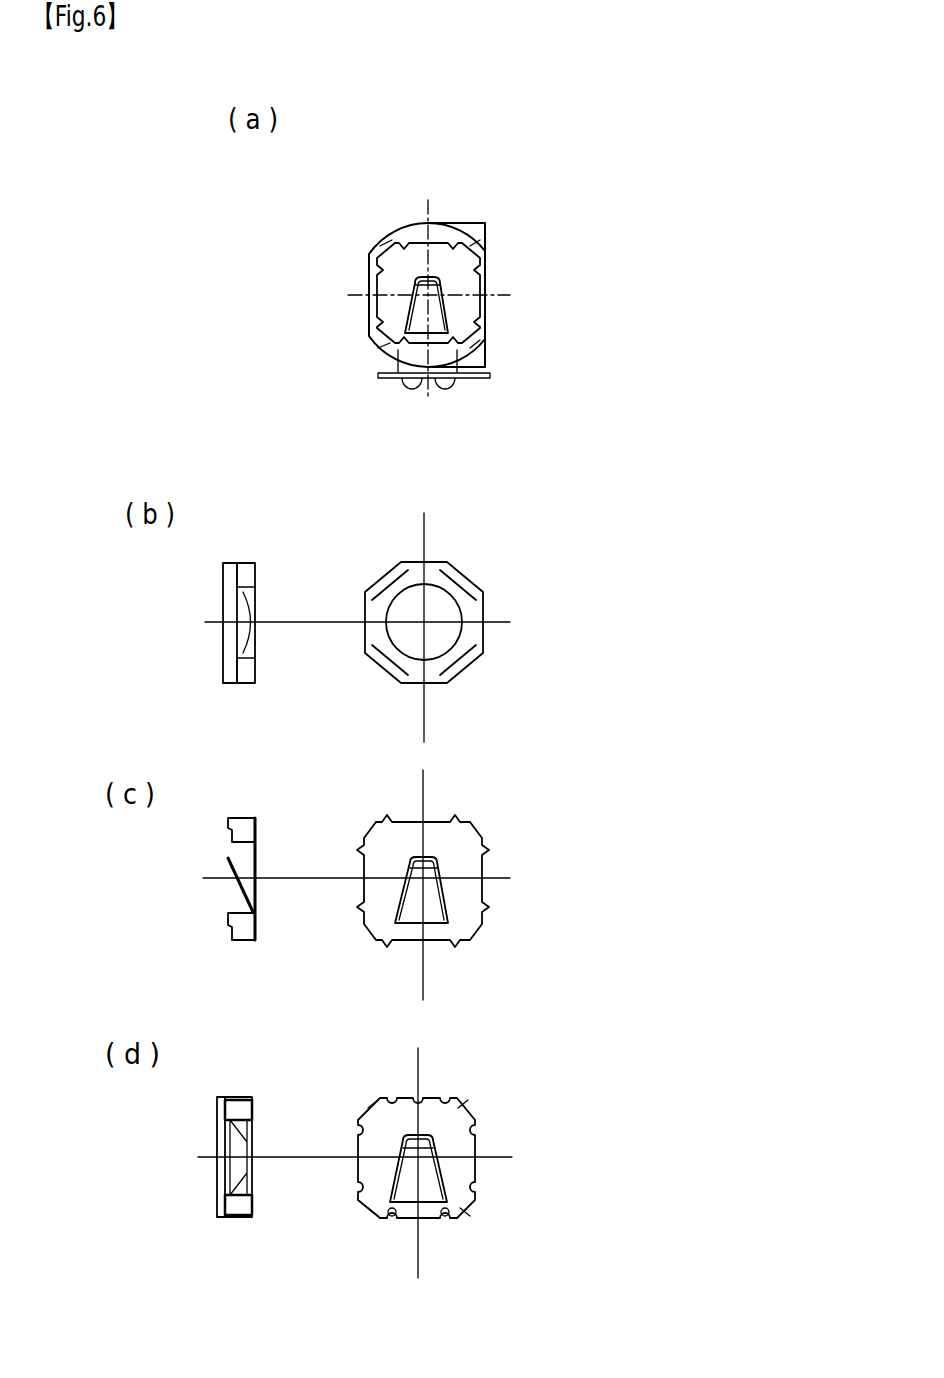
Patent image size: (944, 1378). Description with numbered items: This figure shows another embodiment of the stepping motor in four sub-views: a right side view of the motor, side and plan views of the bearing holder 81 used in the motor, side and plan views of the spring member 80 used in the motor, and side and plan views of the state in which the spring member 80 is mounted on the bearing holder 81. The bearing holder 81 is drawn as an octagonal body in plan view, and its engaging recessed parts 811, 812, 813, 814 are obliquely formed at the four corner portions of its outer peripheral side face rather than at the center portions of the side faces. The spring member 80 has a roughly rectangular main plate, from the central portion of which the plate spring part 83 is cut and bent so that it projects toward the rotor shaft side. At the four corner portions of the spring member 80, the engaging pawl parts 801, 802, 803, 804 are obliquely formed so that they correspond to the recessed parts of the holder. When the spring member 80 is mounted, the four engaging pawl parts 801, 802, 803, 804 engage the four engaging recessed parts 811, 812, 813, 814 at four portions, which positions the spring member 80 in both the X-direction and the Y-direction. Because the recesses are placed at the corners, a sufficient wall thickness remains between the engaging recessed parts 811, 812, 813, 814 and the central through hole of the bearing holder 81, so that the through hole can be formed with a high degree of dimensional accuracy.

The spring member 80 is at (460, 282).
The bearing holder 81 is at (264, 613).
The plate spring part 83 is at (440, 310).
The engaging pawl part 801 is at (381, 245).
The engaging pawl part 802 is at (378, 350).
The engaging pawl part 803 is at (487, 352).
The engaging pawl part 804 is at (485, 242).
The engaging recessed part 811 is at (394, 240).
The engaging recessed part 812 is at (380, 352).
The engaging recessed part 813 is at (490, 350).
The engaging recessed part 814 is at (490, 255).